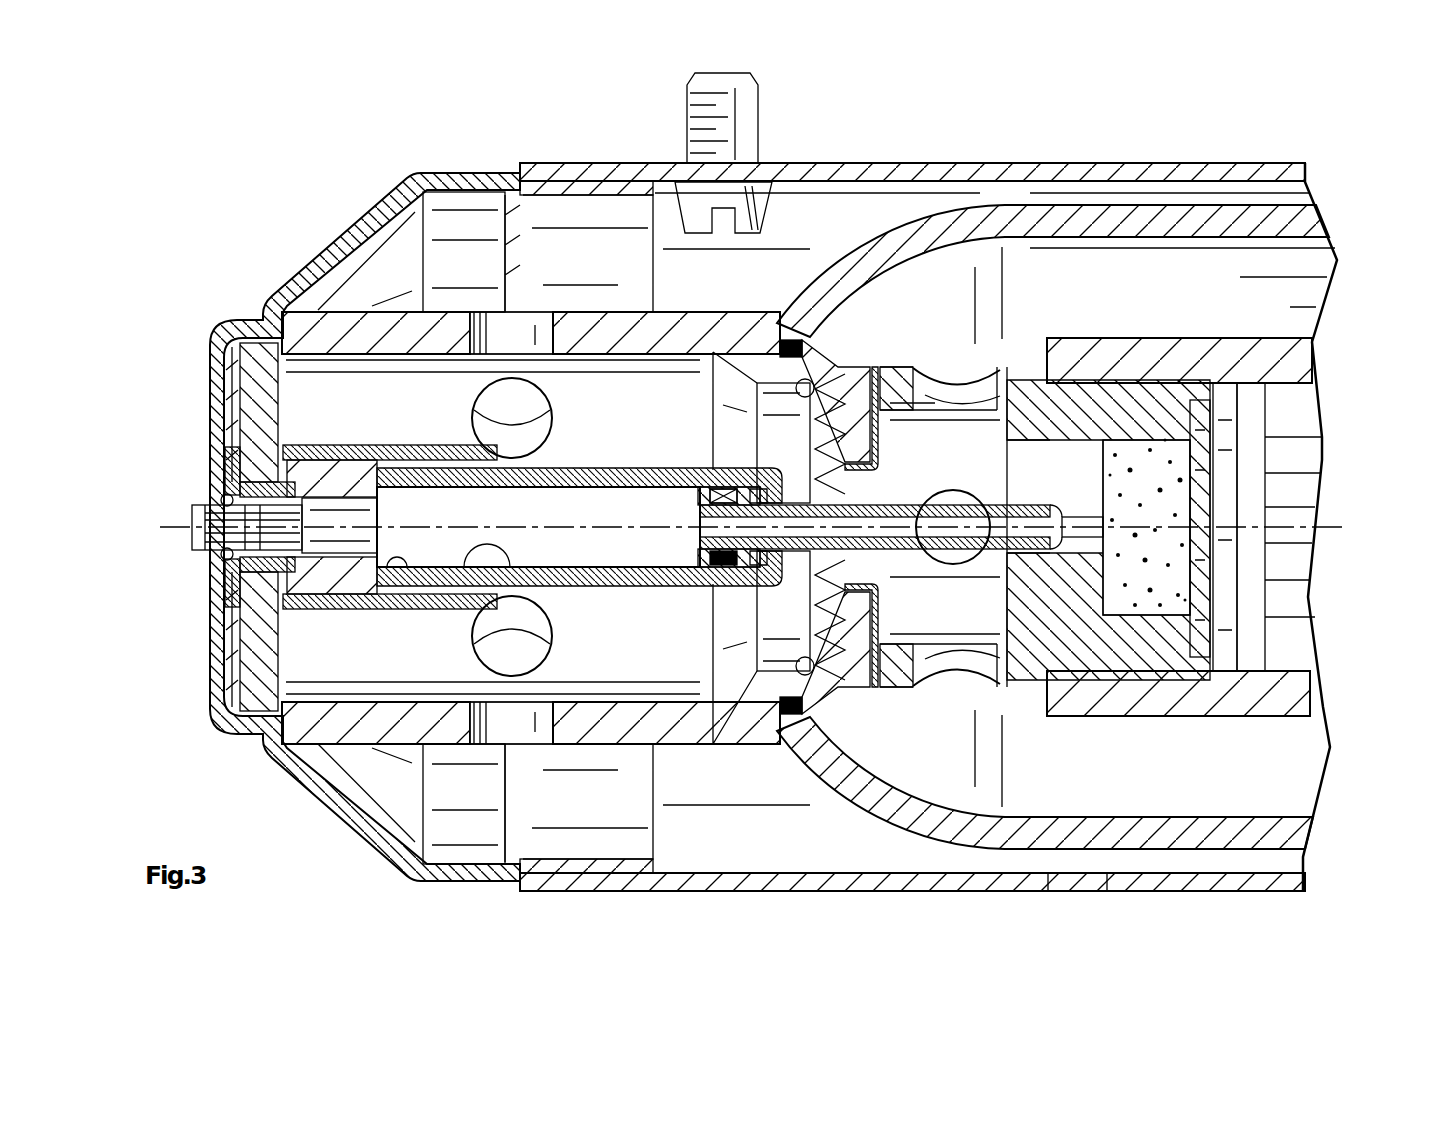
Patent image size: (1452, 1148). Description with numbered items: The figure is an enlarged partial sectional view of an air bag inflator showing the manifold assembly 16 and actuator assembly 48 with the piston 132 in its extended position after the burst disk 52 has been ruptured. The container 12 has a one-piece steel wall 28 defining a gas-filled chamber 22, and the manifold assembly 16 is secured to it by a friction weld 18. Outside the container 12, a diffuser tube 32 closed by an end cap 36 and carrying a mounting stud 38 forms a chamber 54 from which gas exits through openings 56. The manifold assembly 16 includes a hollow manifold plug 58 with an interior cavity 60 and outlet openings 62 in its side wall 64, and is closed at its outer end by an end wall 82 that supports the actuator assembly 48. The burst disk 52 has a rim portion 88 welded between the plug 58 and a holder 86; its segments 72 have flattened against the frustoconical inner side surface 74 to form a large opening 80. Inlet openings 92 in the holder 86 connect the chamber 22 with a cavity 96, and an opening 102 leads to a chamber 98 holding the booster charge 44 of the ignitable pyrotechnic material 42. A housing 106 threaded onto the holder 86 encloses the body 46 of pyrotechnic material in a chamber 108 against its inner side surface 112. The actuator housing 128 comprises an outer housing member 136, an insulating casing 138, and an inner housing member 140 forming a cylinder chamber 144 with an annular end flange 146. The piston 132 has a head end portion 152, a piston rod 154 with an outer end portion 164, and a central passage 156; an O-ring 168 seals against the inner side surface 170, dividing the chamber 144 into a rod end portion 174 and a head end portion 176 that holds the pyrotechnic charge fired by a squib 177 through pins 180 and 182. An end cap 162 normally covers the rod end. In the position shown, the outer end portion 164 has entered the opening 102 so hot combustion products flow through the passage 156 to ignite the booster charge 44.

The container 12 is at (826, 272).
The manifold assembly 16 is at (318, 752).
The friction weld 18 is at (790, 727).
The chamber 22 is at (980, 863).
The one-piece steel wall 28 is at (857, 780).
The diffuser tube 32 is at (905, 165).
The end cap 36 is at (357, 232).
The mounting stud 38 is at (740, 128).
The ignitable pyrotechnic material 42 is at (1250, 395).
The booster charge 44 is at (1163, 473).
The body of pyrotechnic material 46 is at (1297, 410).
The actuator assembly 48 is at (386, 438).
The burst disk 52 is at (920, 690).
The chamber 54 is at (367, 290).
The openings 56 is at (1070, 887).
The manifold plug 58 is at (378, 745).
The interior cavity 60 is at (702, 712).
The outlet openings 62 is at (513, 388).
The cylindrical side wall 64 is at (612, 332).
The segments 72 is at (850, 597).
The frustoconical inner side surface 74 is at (823, 697).
The opening 80 is at (853, 567).
The end wall 82 is at (262, 665).
The holder 86 is at (900, 362).
The rim portion 88 is at (880, 622).
The inlet openings 92 is at (962, 392).
The cavity 96 is at (933, 395).
The chamber 98 is at (1150, 580).
The opening 102 is at (1150, 507).
The housing 106 is at (1110, 703).
The chamber 108 is at (1247, 653).
The inner side surface 112 is at (1283, 673).
The housing 128 is at (450, 440).
The piston 132 is at (898, 560).
The outer housing member 136 is at (316, 470).
The casing 138 is at (323, 477).
The inner housing member 140 is at (586, 462).
The cylinder chamber 144 is at (540, 543).
The annular end flange 146 is at (783, 477).
The head end portion 152 is at (710, 495).
The piston rod 154 is at (900, 496).
The central passage 156 is at (1003, 418).
The end cap 162 is at (657, 587).
The outer end portion 164 is at (968, 522).
The O-ring 168 is at (712, 562).
The inner side surface 170 is at (447, 587).
The rod end portion 174 is at (753, 480).
The head end portion 176 is at (380, 577).
The squib 177 is at (300, 557).
The electrically conductive pin 180 is at (200, 500).
The electrically conductive pin 182 is at (203, 545).